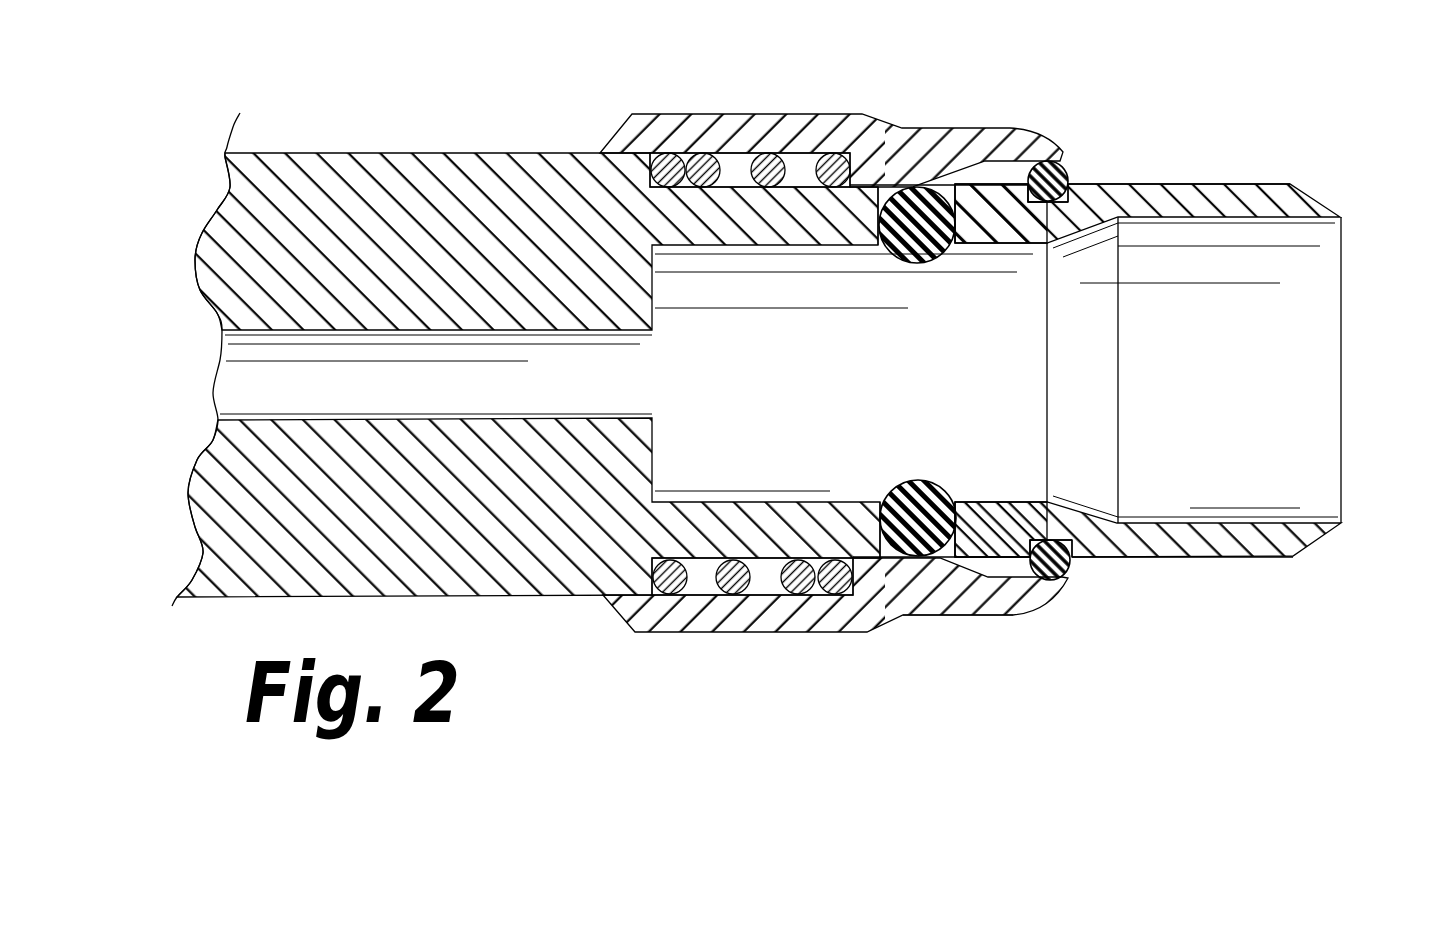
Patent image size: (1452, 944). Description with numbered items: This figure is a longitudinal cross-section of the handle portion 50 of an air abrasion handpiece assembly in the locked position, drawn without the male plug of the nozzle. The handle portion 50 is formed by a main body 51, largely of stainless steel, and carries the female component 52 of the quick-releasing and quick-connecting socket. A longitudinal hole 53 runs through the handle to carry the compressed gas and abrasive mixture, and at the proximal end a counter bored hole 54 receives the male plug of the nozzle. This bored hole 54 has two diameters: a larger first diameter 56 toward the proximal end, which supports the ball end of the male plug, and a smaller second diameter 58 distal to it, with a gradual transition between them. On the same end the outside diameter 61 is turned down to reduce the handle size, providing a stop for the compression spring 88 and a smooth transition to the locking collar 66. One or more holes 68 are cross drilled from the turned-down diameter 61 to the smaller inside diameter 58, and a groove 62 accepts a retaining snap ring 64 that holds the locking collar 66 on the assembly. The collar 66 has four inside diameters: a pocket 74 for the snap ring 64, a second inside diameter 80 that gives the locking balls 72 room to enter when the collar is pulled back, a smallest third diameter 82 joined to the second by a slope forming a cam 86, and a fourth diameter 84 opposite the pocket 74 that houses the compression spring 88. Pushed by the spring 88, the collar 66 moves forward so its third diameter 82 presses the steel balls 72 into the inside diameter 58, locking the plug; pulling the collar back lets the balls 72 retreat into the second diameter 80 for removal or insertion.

The handle portion 50 is at (572, 673).
The main body 51 is at (346, 149).
The female component 52 is at (1339, 435).
The longitudinal hole 53 is at (247, 382).
The counter bored hole 54 is at (1317, 280).
The first diameter 56 is at (1228, 514).
The second diameter 58 is at (995, 248).
The outside diameter 61 is at (1158, 181).
The groove 62 is at (1050, 203).
The retaining snap ring 64 is at (1063, 165).
The locking collar 66 is at (738, 113).
The holes 68 is at (878, 200).
The locking ball 72 is at (930, 262).
The pocket 74 is at (1068, 588).
The second inside diameter 80 is at (1008, 577).
The third diameter 82 is at (889, 578).
The fourth diameter 84 is at (703, 575).
The cam 86 is at (960, 572).
The compression spring 88 is at (668, 147).